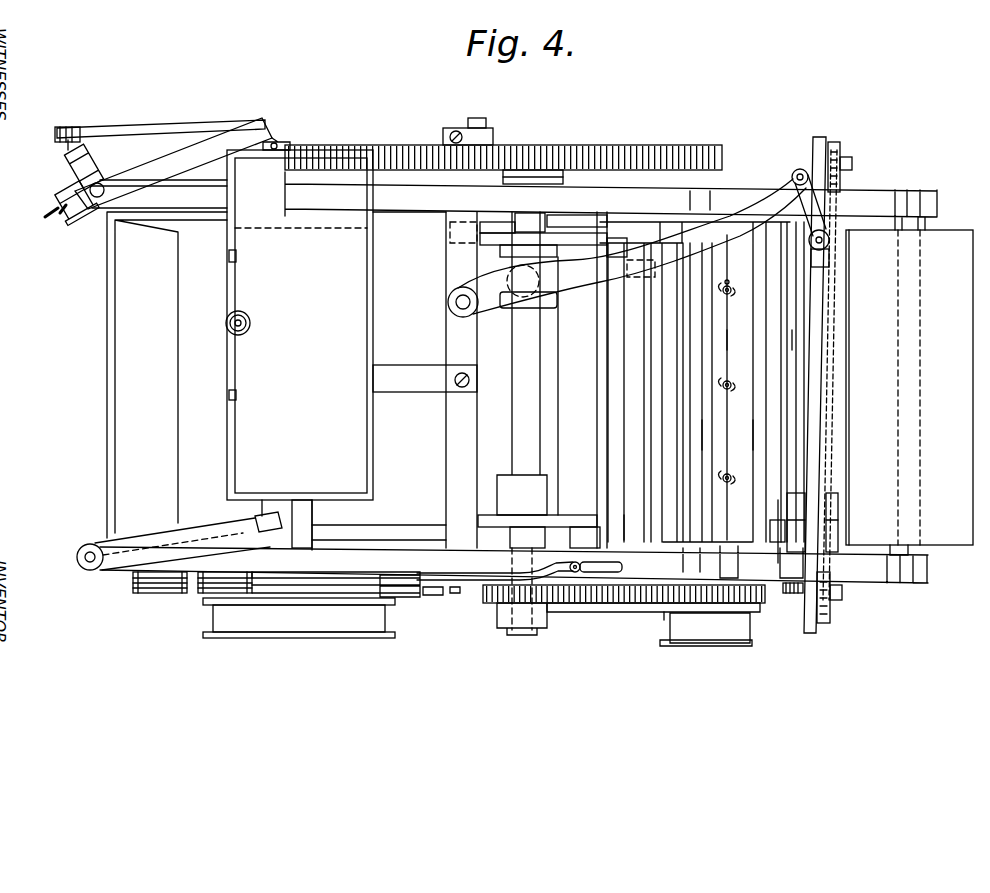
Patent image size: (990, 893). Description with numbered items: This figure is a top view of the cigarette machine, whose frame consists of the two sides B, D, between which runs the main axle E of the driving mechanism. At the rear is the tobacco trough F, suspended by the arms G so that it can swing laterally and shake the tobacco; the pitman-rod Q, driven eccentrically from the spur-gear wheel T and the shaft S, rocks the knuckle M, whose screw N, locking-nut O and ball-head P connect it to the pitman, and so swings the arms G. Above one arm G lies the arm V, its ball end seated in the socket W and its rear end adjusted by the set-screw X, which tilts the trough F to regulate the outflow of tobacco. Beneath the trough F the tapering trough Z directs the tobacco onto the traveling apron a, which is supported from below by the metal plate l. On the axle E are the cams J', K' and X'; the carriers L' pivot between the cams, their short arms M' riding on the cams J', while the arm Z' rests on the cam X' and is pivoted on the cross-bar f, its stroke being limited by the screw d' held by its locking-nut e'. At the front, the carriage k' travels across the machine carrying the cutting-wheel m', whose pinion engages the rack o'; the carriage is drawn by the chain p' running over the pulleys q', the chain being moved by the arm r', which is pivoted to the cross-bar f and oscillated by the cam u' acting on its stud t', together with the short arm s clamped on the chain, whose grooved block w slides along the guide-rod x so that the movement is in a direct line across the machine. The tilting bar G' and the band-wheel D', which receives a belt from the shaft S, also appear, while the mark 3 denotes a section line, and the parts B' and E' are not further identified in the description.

The side of the frame D is at (531, 363).
The spur-gear wheel T is at (648, 148).
The cam X' is at (545, 178).
The trough Z is at (167, 375).
The trough F is at (299, 325).
The traveling apron a is at (437, 380).
The cross-bar f is at (425, 369).
The section line 3 is at (394, 377).
The main axle E is at (522, 363).
The tilting bar G' is at (549, 386).
The cam K' is at (552, 374).
The short arm M' is at (527, 381).
The cam J' is at (413, 380).
The cam u' is at (528, 276).
The arm r' is at (627, 248).
The stud t' is at (523, 281).
The short arm s is at (809, 202).
The grooved block w is at (819, 248).
The chain p' is at (820, 385).
The guide-rod x is at (827, 375).
The pulley q' is at (842, 383).
The metal plate l is at (730, 273).
The rack o' is at (778, 341).
The cutting-wheel m' is at (770, 530).
The carriage k' is at (812, 522).
The side of the frame B is at (514, 564).
The block B' is at (301, 536).
The shaft S is at (302, 524).
The arm G is at (182, 358).
The carrier L' is at (83, 566).
The pulley E' is at (296, 590).
The band-wheel D' is at (299, 618).
The arm Z' is at (495, 568).
The screw d' is at (575, 556).
The locking-nut e' is at (609, 566).
The arm V is at (182, 166).
The pitman-rod Q is at (188, 132).
The ball-head P is at (76, 128).
The socket W is at (288, 136).
The screw N is at (92, 150).
The locking-nut O is at (66, 146).
The knuckle M is at (69, 192).
The set-screw X is at (55, 222).